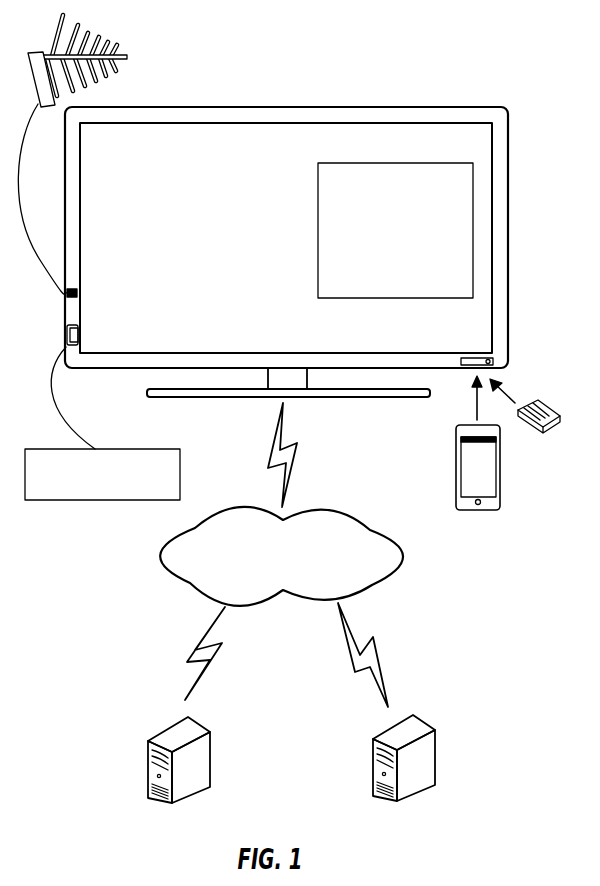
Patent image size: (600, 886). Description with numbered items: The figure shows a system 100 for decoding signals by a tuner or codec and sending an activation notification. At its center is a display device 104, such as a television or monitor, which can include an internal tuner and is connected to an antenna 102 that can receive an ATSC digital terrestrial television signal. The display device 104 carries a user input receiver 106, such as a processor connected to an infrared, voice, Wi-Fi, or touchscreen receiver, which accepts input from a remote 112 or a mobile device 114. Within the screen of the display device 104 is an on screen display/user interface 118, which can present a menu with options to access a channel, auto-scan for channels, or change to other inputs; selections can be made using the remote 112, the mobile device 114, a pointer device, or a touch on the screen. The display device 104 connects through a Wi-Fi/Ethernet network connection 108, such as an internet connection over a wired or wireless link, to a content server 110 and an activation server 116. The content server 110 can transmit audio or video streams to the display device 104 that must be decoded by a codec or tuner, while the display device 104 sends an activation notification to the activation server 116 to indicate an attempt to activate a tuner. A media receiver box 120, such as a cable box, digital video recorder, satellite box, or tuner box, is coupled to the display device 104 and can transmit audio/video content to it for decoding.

The system 100 is at (482, 21).
The antenna 102 is at (128, 56).
The display device 104 is at (230, 107).
The user input receiver 106 is at (497, 360).
The Wi-Fi/Ethernet network connection 108 is at (325, 510).
The content server 110 is at (432, 728).
The remote 112 is at (535, 404).
The mobile device 114 is at (502, 506).
The activation server 116 is at (207, 728).
The on screen display/user interface 118 is at (428, 163).
The media receiver box 120 is at (150, 449).